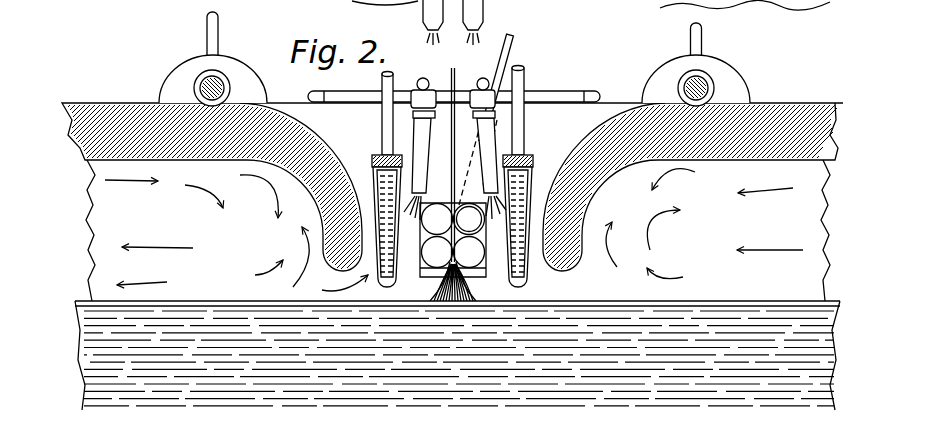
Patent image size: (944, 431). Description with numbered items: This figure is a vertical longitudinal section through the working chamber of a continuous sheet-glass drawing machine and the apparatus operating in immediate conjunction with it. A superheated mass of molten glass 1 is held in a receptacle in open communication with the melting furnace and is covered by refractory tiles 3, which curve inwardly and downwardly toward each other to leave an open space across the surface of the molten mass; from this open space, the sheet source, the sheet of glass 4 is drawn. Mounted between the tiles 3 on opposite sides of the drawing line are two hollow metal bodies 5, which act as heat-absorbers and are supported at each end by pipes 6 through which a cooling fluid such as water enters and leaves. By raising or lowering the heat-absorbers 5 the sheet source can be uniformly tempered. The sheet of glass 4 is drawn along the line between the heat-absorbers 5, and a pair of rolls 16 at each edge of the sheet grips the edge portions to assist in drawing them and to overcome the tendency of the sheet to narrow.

The mass of molten glass 1 is at (708, 301).
The tiles 3 is at (308, 200).
The sheet of glass 4 is at (456, 78).
The hollow bodies 5 is at (377, 167).
The pipes 6 is at (382, 125).
The rolls 16 is at (437, 257).